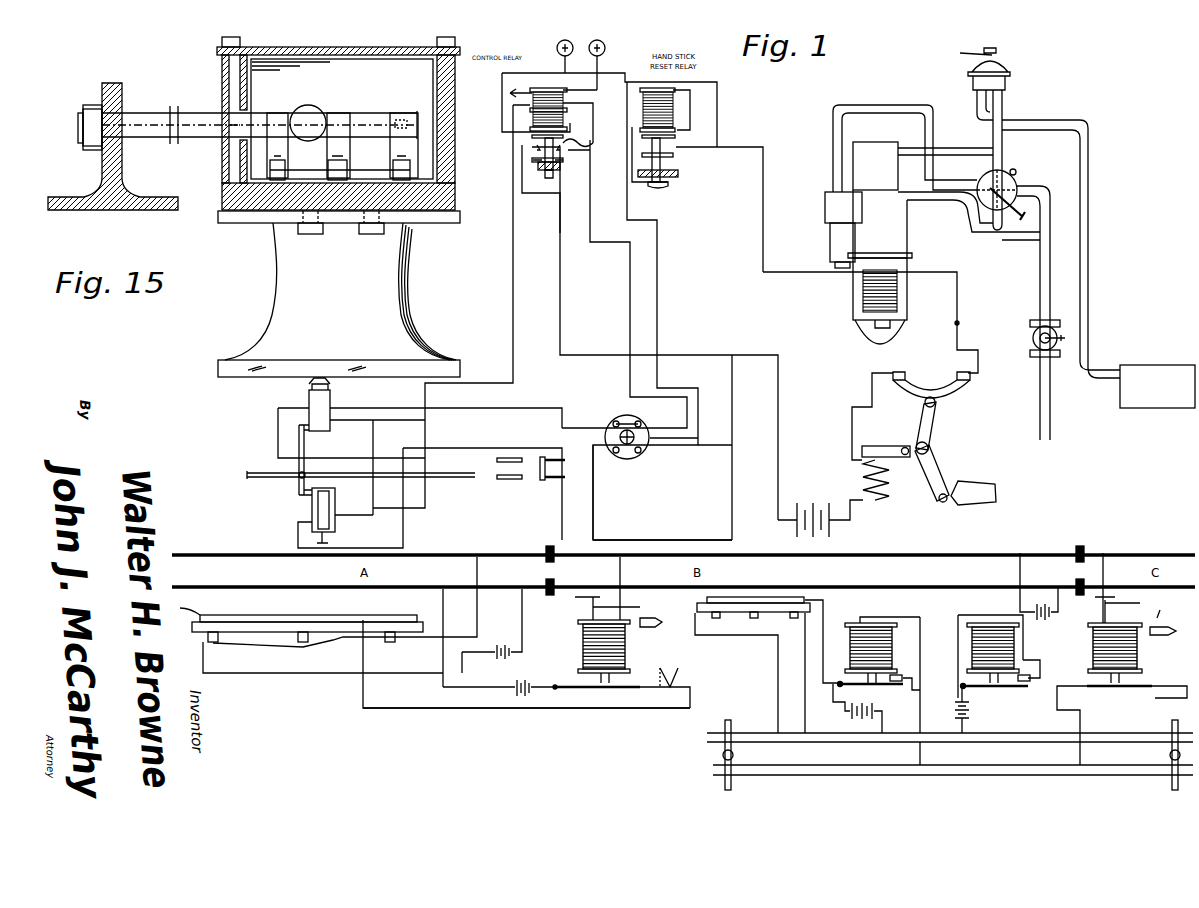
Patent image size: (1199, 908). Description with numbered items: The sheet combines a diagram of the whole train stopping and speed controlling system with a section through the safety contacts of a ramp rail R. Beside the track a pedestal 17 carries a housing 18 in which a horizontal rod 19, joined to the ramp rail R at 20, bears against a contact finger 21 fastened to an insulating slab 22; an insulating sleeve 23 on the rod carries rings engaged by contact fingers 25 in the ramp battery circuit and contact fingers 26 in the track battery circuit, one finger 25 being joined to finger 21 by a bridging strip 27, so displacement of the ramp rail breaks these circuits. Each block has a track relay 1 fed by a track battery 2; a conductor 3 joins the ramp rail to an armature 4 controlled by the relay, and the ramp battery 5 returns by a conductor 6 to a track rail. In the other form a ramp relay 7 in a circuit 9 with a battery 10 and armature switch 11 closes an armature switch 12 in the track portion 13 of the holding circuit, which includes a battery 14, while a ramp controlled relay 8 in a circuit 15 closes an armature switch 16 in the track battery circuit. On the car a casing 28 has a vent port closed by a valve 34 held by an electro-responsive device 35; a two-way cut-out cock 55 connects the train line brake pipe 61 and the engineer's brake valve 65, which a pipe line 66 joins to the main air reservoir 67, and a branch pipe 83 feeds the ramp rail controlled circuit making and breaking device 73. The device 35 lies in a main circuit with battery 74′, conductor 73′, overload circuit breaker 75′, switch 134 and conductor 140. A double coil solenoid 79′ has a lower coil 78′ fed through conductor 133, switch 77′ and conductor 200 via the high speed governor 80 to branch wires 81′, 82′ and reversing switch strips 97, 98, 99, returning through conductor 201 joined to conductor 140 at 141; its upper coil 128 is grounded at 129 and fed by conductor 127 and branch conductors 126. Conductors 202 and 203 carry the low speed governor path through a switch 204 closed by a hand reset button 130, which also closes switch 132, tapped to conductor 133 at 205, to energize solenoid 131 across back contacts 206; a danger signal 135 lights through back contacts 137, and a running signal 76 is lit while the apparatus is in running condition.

In FIG. 15, the ramp rail R is at (105, 170).
In FIG. 15, the pedestal 17 is at (339, 294).
In FIG. 15, the housing 18 is at (340, 85).
In FIG. 15, the horizontal rod 19 is at (160, 113).
In FIG. 15, the connection of rod with ramp rail 20 is at (122, 132).
In FIG. 15, the contact finger 21 is at (276, 140).
In FIG. 15, the slab of insulating material 22 is at (440, 185).
In FIG. 15, the sleeve of insulating material 23 is at (378, 120).
In FIG. 15, the contact fingers 25 is at (347, 145).
In FIG. 15, the contact fingers 26 is at (408, 147).
In FIG. 15, the bridging strip 27 is at (300, 170).
In FIG. 1, the track relay 1 is at (583, 640).
In FIG. 1, the track battery 2 is at (505, 647).
In FIG. 1, the conductor 3 is at (527, 708).
In FIG. 1, the armature 4 is at (600, 690).
In FIG. 1, the ramp battery 5 is at (533, 687).
In FIG. 1, the conductor 6 is at (444, 611).
In FIG. 1, the ramp relay 7 is at (850, 648).
In FIG. 1, the ramp controlled relay 8 is at (972, 647).
In FIG. 1, the circuit 9 is at (921, 687).
In FIG. 1, the battery 10 is at (970, 708).
In FIG. 1, the armature switch 11 is at (1130, 688).
In FIG. 1, the armature switch 12 is at (897, 676).
In FIG. 1, the track portion of holding circuit 13 is at (843, 702).
In FIG. 1, the battery 14 is at (862, 718).
In FIG. 1, the circuit 15 is at (745, 612).
In FIG. 1, the armature switch 16 is at (1030, 680).
In FIG. 1, the casing 28 is at (932, 181).
In FIG. 1, the valve 34 is at (906, 266).
In FIG. 1, the electro-responsive device 35 is at (872, 292).
In FIG. 1, the two-way cut-out cock 55 is at (1013, 181).
In FIG. 1, the train line brake pipe 61 is at (1051, 390).
In FIG. 1, the engineer's brake valve 65 is at (1010, 68).
In FIG. 1, the pipe line 66 is at (1090, 271).
In FIG. 1, the main air reservoir 67 is at (1160, 367).
In FIG. 1, the ramp rail controlled circuit making and breaking device 73 is at (310, 395).
In FIG. 1, the conductor 73′ is at (730, 86).
In FIG. 1, the battery 74′ is at (840, 524).
In FIG. 1, the overload circuit breaker 75′ is at (949, 395).
In FIG. 1, the running signal 76 is at (557, 46).
In FIG. 1, the switch 77′ is at (530, 140).
In FIG. 1, the lower coil 78′ is at (525, 112).
In FIG. 1, the double coil solenoid 79′ is at (545, 90).
In FIG. 1, the high speed governor 80 is at (618, 420).
In FIG. 1, the branch wire 81′ is at (370, 407).
In FIG. 1, the branch wire 82′ is at (540, 418).
In FIG. 1, the branch pipe 83 is at (300, 442).
In FIG. 1, the continuous conductor strip 97 is at (565, 478).
In FIG. 1, the conductor strip section 98 is at (508, 480).
In FIG. 1, the conductor strip section 99 is at (565, 460).
In FIG. 1, the branch conductors 126 is at (392, 421).
In FIG. 1, the conductor 127 is at (513, 318).
In FIG. 1, the upper coil 128 is at (570, 102).
In FIG. 1, the ground 129 is at (510, 93).
In FIG. 1, the hand reset button 130 is at (685, 173).
In FIG. 1, the solenoid 131 is at (668, 118).
In FIG. 1, the switch 132 is at (678, 140).
In FIG. 1, the conductor 133 is at (633, 72).
In FIG. 1, the switch 134 is at (548, 178).
In FIG. 1, the danger signal 135 is at (605, 48).
In FIG. 1, the back contacts 137 is at (563, 133).
In FIG. 1, the conductor 140 is at (590, 92).
In FIG. 1, the connection point 141 is at (732, 355).
In FIG. 1, the conductor 200 is at (630, 297).
In FIG. 1, the conductor 201 is at (732, 505).
In FIG. 1, the conductor 202 is at (595, 517).
In FIG. 1, the conductor 203 is at (658, 313).
In FIG. 1, the manually operable normally open switch 204 is at (680, 150).
In FIG. 1, the tap connection 205 is at (633, 130).
In FIG. 1, the back contacts 206 is at (537, 155).